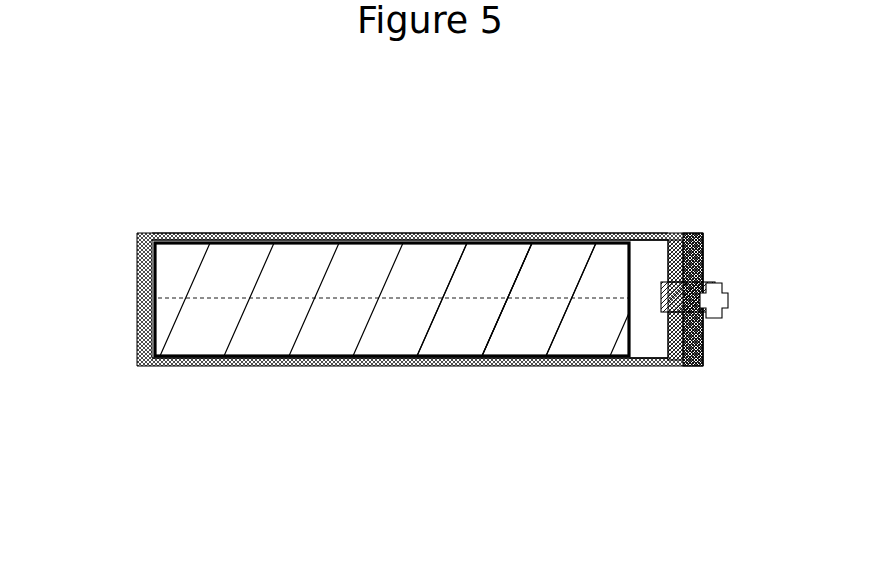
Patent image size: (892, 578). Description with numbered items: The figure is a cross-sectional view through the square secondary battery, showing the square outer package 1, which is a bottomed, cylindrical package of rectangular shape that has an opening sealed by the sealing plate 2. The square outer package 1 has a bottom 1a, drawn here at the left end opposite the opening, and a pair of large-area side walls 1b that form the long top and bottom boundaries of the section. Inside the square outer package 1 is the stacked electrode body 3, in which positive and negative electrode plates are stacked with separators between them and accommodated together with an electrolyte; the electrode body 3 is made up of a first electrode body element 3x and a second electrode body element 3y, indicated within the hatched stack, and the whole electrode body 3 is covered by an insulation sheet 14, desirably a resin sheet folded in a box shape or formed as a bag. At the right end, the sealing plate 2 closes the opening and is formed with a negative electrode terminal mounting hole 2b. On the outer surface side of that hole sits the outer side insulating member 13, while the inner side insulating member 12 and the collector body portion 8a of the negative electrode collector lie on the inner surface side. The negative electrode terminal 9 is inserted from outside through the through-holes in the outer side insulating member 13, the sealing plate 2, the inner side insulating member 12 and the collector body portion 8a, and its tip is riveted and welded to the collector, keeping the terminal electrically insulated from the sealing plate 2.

The square outer package 1 is at (337, 365).
The bottom 1a is at (138, 290).
The large-area side walls 1b is at (323, 233).
The sealing plate 2 is at (703, 358).
The negative electrode terminal mounting hole 2b is at (707, 337).
The electrode body 3 is at (530, 173).
The first electrode body element 3x is at (478, 283).
The second electrode body element 3y is at (532, 340).
The collector body portion 8a is at (667, 257).
The negative electrode terminal 9 is at (725, 308).
The inner side insulating member 12 is at (683, 253).
The outer side insulating member 13 is at (713, 282).
The insulation sheet 14 is at (192, 233).